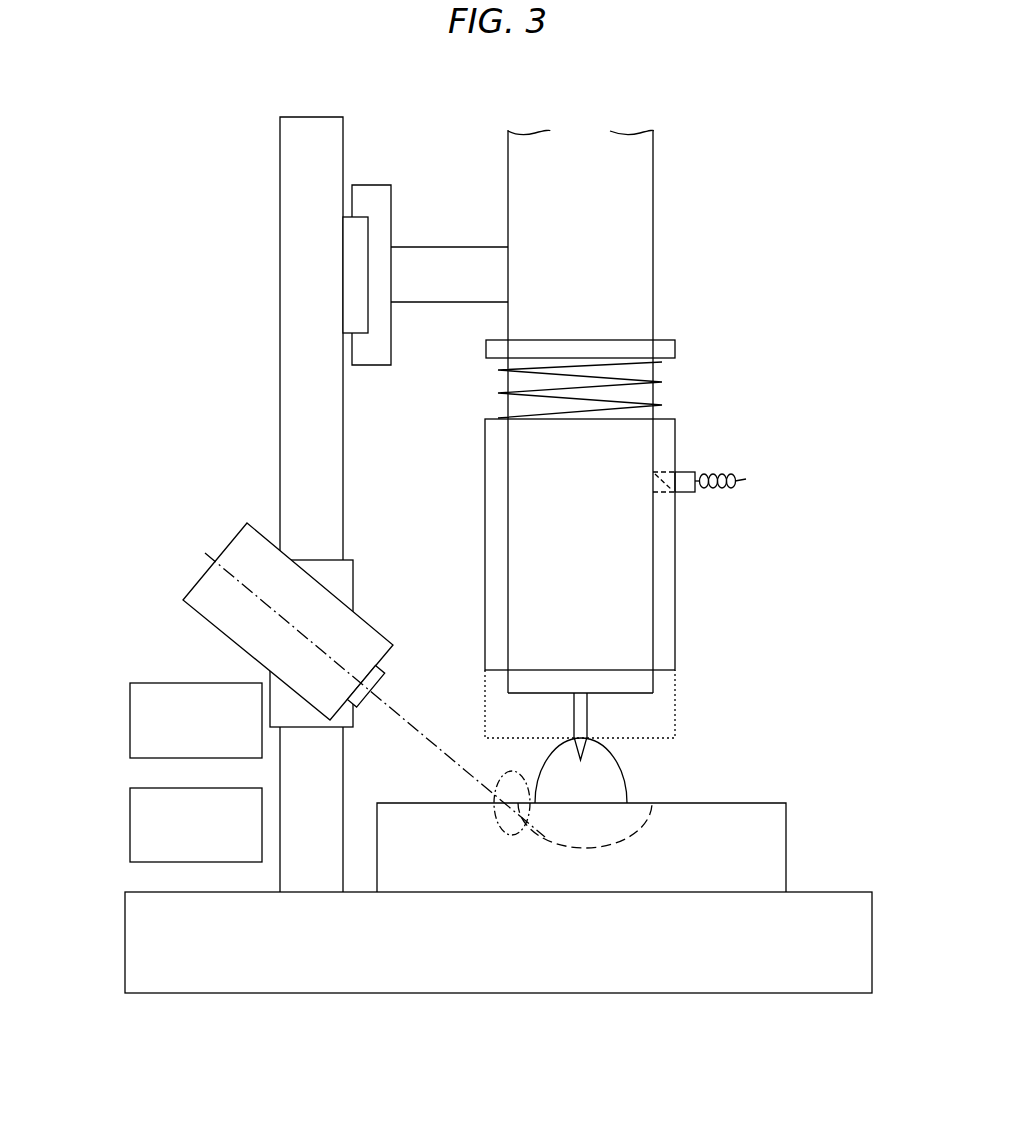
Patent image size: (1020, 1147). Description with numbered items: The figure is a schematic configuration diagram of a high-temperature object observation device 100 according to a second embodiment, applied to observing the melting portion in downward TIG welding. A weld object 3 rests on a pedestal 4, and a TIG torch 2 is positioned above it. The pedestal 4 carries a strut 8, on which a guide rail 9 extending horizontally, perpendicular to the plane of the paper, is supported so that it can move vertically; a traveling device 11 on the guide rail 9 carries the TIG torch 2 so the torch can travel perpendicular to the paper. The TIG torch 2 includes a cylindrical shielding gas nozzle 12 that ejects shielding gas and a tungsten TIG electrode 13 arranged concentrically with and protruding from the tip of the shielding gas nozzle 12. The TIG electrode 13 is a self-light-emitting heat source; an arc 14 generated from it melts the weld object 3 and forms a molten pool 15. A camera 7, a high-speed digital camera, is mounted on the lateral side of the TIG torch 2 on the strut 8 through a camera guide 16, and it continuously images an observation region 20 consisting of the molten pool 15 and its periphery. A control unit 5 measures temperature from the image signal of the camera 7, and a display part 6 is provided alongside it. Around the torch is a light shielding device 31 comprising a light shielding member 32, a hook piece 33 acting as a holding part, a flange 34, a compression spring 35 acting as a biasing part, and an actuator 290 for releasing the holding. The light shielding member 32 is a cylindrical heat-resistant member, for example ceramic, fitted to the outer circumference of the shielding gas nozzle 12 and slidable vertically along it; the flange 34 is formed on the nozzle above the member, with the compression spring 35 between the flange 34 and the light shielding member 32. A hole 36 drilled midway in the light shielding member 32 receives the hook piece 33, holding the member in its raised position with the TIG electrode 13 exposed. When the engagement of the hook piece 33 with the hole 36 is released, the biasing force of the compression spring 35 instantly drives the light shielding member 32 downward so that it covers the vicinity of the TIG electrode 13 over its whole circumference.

The high-temperature object observation device 100 is at (247, 151).
The TIG torch 2 is at (506, 492).
The weld object 3 is at (755, 805).
The pedestal 4 is at (848, 892).
The control unit 5 is at (130, 840).
The display part 6 is at (130, 707).
The camera 7 is at (247, 523).
The strut 8 is at (280, 362).
The guide rail 9 is at (370, 236).
The traveling device 11 is at (373, 185).
The shielding gas nozzle 12 is at (653, 545).
The TIG electrode 13 is at (587, 727).
The arc 14 is at (617, 770).
The molten pool 15 is at (640, 803).
The camera guide 16 is at (353, 587).
The observation region 20 is at (495, 792).
The light shielding device 31 is at (662, 562).
The light shielding member 32 is at (675, 617).
The hook piece 33 is at (683, 472).
The flange 34 is at (662, 340).
The compression spring 35 is at (520, 378).
The hole 36 is at (668, 490).
The actuator 290 is at (717, 475).